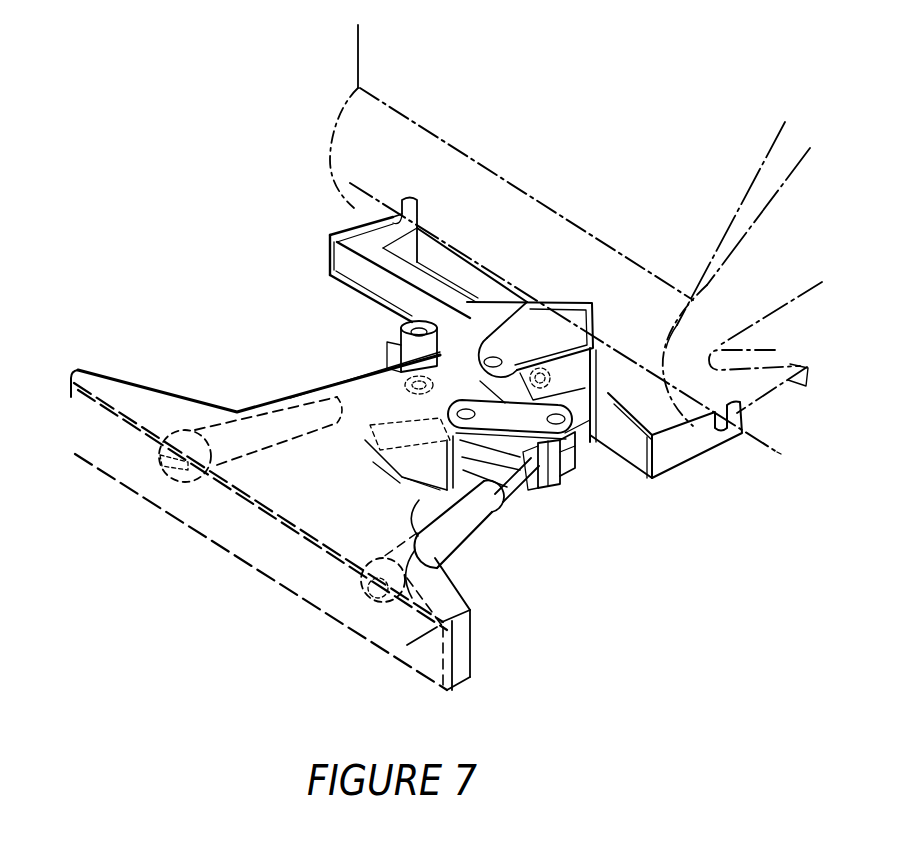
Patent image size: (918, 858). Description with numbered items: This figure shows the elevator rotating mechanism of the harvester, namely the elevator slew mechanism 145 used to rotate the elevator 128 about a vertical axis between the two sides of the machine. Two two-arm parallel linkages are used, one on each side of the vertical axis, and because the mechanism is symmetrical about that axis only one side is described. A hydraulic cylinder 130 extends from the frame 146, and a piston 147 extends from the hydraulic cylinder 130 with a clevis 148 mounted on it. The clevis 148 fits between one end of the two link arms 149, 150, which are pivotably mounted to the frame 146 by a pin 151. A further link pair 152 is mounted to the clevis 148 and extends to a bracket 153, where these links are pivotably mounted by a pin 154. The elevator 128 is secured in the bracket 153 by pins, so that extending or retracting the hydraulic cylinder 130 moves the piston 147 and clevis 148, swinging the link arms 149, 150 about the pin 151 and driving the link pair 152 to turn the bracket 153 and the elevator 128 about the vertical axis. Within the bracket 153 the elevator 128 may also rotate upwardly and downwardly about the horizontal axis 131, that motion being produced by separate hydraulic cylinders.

The elevator 128 is at (370, 73).
The hydraulic cylinder 130 is at (470, 530).
The horizontal axis 131 is at (781, 453).
The elevator slew mechanism 145 is at (300, 344).
The frame 146 is at (457, 655).
The piston 147 is at (510, 488).
The clevis 148 is at (573, 463).
The link arm 149 is at (488, 414).
The link arm 150 is at (548, 486).
The pin 151 is at (410, 419).
The link pair 152 is at (592, 396).
The bracket 153 is at (700, 446).
The pin 154 is at (546, 371).